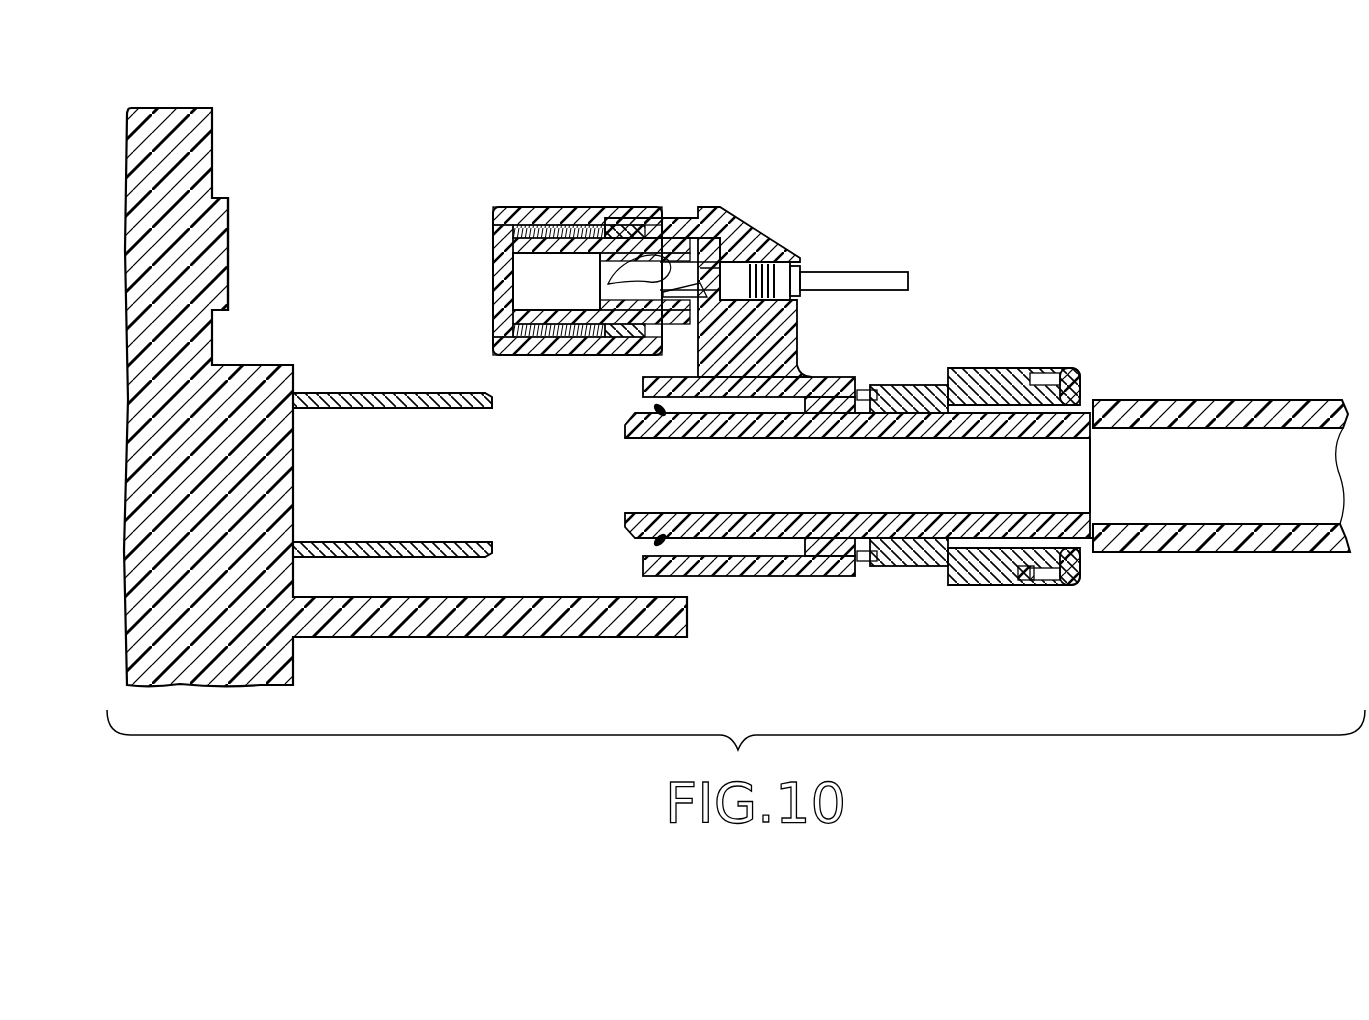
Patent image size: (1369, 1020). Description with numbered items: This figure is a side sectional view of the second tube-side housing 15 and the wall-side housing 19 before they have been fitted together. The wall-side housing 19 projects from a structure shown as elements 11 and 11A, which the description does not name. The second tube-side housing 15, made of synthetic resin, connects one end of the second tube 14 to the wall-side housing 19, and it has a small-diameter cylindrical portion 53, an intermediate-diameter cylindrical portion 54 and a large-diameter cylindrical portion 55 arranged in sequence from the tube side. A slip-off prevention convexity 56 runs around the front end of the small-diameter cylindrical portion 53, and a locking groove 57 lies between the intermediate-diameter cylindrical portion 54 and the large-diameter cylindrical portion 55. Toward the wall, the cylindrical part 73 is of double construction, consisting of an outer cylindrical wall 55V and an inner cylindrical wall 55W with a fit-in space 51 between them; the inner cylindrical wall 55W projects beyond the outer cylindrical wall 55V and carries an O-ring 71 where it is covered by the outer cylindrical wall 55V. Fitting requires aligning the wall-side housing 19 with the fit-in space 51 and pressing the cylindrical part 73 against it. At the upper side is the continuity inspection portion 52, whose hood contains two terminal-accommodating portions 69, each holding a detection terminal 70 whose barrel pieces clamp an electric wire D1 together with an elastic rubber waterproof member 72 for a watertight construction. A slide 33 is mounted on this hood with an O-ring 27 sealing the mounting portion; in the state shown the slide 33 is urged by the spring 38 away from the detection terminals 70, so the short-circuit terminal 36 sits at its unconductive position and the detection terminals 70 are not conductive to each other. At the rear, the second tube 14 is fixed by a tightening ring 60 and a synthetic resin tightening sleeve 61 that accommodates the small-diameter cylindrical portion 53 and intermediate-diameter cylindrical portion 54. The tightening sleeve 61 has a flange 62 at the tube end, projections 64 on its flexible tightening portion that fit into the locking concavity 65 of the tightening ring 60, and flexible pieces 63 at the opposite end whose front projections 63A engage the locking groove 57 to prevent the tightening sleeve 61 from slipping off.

The wall 11 is at (238, 129).
The wall step 11A is at (228, 237).
The wall-side housing 19 is at (360, 556).
The slide 33 is at (626, 260).
The spring 38 is at (495, 212).
The short-circuit terminal 36 is at (515, 283).
The O-ring 27 is at (630, 347).
The continuity inspection portion 52 is at (672, 202).
The detection terminal 70 is at (698, 260).
The terminal-accommodating portion 69 is at (760, 258).
The second tube-side housing 15 is at (837, 228).
The waterproof member 72 is at (818, 256).
The electric wire D1 is at (885, 270).
The large-diameter cylindrical portion 55 is at (797, 463).
The inner cylindrical wall 55W is at (630, 520).
The outer cylindrical wall 55V is at (834, 552).
The cylindrical part 73 is at (797, 502).
The fit-in space 51 is at (742, 560).
The O-ring 71 is at (655, 413).
The intermediate-diameter cylindrical portion 54 is at (912, 388).
The locking groove 57 is at (868, 396).
The flexible piece 63 is at (940, 578).
The front projection 63A is at (878, 556).
The tightening ring 60 is at (1014, 457).
The locking concavity 65 is at (1010, 370).
The projection 64 is at (1027, 586).
The tightening sleeve 61 is at (1096, 425).
The flange 62 is at (1076, 368).
The small-diameter cylindrical portion 53 is at (1088, 442).
The slip-off prevention convexity 56 is at (1090, 550).
The second tube 14 is at (1212, 400).